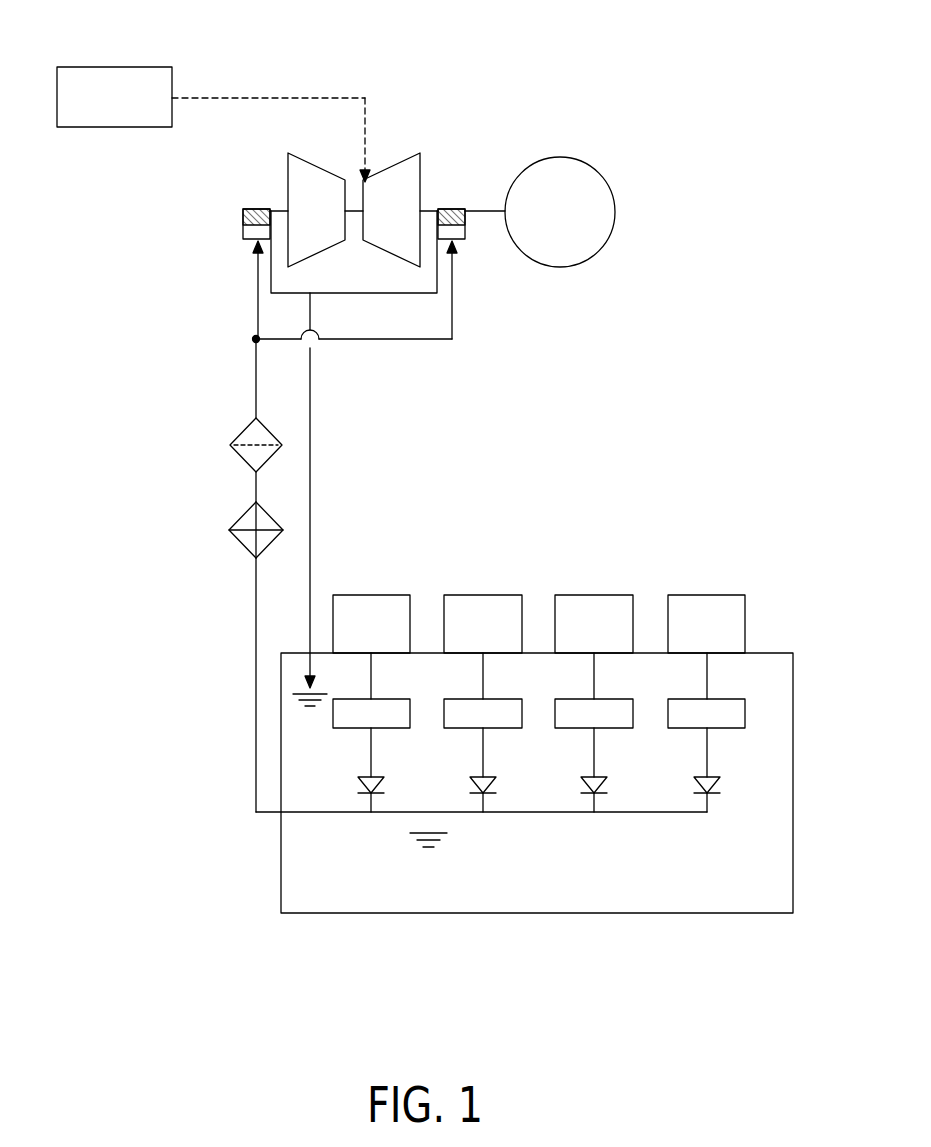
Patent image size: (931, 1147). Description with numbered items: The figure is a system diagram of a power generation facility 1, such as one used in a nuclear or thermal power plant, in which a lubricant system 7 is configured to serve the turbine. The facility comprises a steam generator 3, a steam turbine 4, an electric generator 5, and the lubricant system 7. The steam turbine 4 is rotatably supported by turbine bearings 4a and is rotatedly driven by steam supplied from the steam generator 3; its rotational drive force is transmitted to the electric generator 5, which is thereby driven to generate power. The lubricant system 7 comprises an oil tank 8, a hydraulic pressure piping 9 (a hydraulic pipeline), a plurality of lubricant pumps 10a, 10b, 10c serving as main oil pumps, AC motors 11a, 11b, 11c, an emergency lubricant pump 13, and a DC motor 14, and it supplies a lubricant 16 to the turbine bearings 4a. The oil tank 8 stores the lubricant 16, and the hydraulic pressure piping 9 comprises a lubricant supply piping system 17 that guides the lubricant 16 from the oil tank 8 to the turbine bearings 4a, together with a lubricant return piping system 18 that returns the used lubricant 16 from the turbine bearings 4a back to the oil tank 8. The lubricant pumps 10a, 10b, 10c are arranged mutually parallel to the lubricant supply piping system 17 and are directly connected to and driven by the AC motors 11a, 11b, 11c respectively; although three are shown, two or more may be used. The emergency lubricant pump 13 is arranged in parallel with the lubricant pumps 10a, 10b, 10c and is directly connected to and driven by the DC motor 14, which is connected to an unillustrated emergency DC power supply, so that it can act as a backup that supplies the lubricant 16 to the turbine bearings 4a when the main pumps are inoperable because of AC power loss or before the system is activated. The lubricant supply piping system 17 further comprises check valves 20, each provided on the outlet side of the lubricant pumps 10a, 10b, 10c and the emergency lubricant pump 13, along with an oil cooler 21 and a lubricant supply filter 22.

The power generation facility 1 is at (503, 80).
The steam generator 3 is at (114, 67).
The steam turbine 4 is at (405, 158).
The turbine bearings 4a is at (253, 209).
The electric generator 5 is at (560, 157).
The lubricant system 7 is at (416, 915).
The oil tank 8 is at (667, 913).
The hydraulic pressure piping 9 is at (256, 392).
The lubricant pump 10a is at (382, 697).
The lubricant pump 10b is at (493, 697).
The lubricant pump 10c is at (605, 697).
The AC motor 11a is at (397, 595).
The AC motor 11b is at (509, 595).
The AC motor 11c is at (620, 595).
The emergency lubricant pump 13 is at (715, 697).
The DC motor 14 is at (732, 595).
The lubricant 16 is at (572, 864).
The lubricant supply piping system 17 is at (255, 685).
The lubricant return piping system 18 is at (312, 475).
The check valves 20 is at (382, 778).
The oil cooler 21 is at (230, 530).
The lubricant supply filter 22 is at (230, 445).